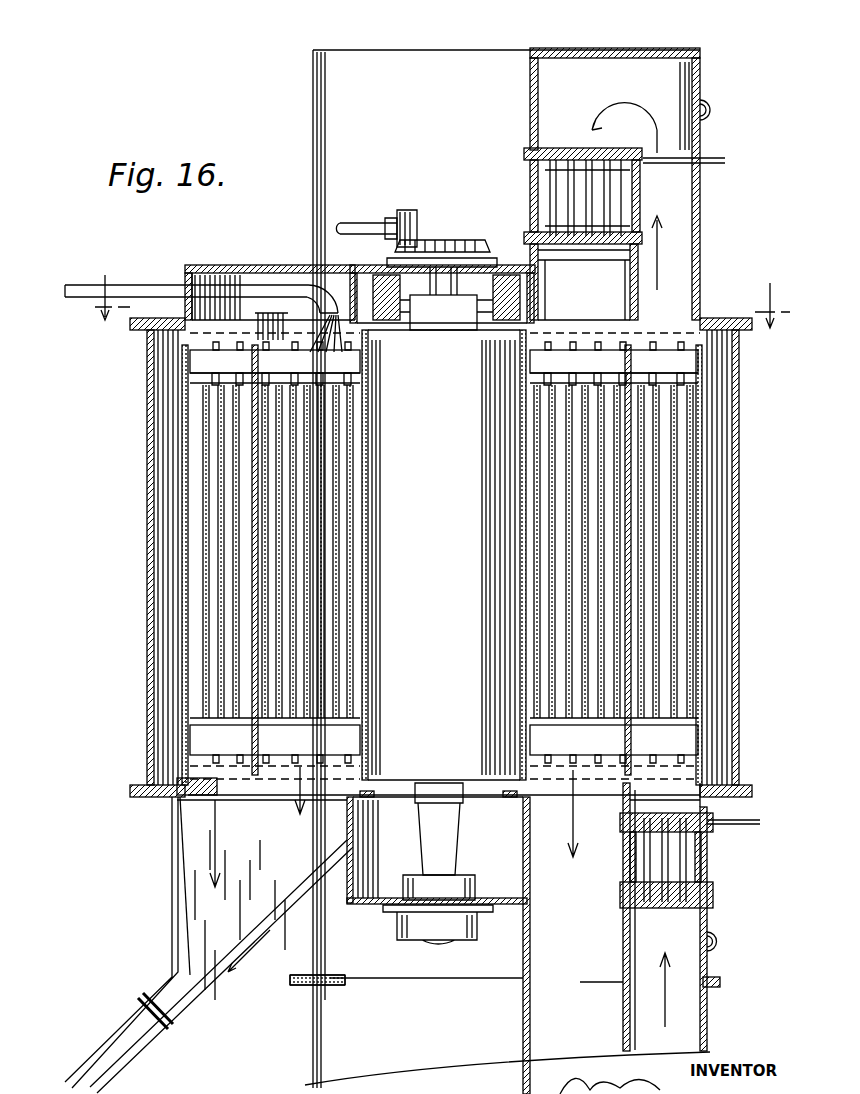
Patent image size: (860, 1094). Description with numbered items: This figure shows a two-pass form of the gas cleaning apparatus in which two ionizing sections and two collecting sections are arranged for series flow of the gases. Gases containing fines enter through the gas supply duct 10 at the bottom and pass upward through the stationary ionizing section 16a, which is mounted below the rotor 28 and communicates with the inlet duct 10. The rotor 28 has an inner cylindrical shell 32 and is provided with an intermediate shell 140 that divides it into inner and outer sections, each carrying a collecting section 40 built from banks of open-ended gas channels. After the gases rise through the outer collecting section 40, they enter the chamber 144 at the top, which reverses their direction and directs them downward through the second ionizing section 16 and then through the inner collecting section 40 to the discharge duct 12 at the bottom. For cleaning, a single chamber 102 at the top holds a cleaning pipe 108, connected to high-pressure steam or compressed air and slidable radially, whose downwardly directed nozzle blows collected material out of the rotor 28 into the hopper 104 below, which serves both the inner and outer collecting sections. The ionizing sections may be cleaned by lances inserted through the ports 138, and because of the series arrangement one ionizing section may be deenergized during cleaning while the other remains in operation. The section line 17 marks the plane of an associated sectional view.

The gas supply duct 10 is at (680, 968).
The discharge duct 12 is at (545, 931).
The ionizing section 16 is at (575, 190).
The stationary ionizing section 16a is at (680, 866).
The section line 17- 17 is at (442, 293).
The rotor 28 is at (441, 411).
The inner cylindrical shell 32 is at (525, 498).
The collecting section 40 is at (560, 612).
The chamber 102 is at (262, 277).
The hopper 104 is at (208, 958).
The cleaning pipe 108 is at (204, 292).
The ports 138 is at (712, 105).
The intermediate shell 140 is at (630, 487).
The chamber 144 is at (652, 72).